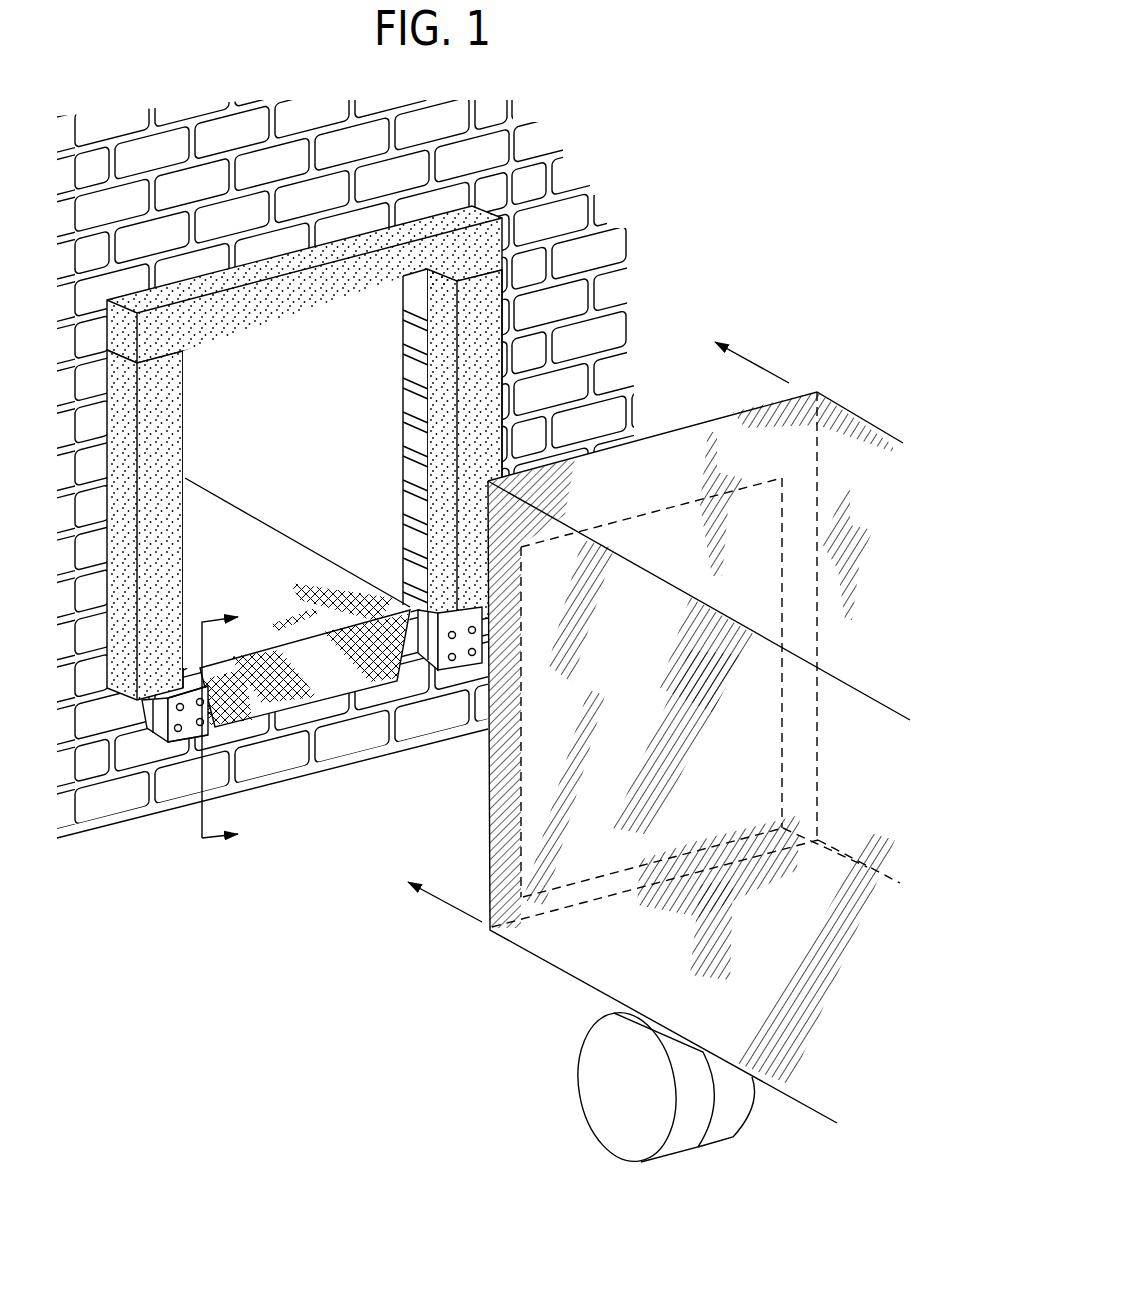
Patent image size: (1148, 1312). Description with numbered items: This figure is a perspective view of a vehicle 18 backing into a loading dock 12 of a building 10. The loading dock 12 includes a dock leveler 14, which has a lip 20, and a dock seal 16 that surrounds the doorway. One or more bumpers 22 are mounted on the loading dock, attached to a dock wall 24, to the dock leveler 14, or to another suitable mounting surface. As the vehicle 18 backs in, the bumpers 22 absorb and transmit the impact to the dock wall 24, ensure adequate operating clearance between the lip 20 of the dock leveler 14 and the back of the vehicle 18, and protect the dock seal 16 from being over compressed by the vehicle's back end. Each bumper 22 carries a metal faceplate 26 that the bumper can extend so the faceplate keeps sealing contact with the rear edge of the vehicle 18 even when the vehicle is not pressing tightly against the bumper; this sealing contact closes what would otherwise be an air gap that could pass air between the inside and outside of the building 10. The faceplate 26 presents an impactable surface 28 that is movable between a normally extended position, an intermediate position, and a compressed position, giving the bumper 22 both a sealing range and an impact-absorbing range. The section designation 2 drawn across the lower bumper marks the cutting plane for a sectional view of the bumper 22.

The building 10 is at (155, 142).
The loading dock 12 is at (288, 950).
The dock leveler 14 is at (226, 532).
The dock seal 16 is at (185, 440).
The vehicle 18 is at (528, 953).
The lip 20 is at (338, 742).
The bumper 22 is at (285, 754).
The dock wall 24 is at (278, 758).
The metal faceplate 26 is at (197, 739).
The impactable surface 28 is at (188, 716).
The section line 2- 2 is at (231, 724).